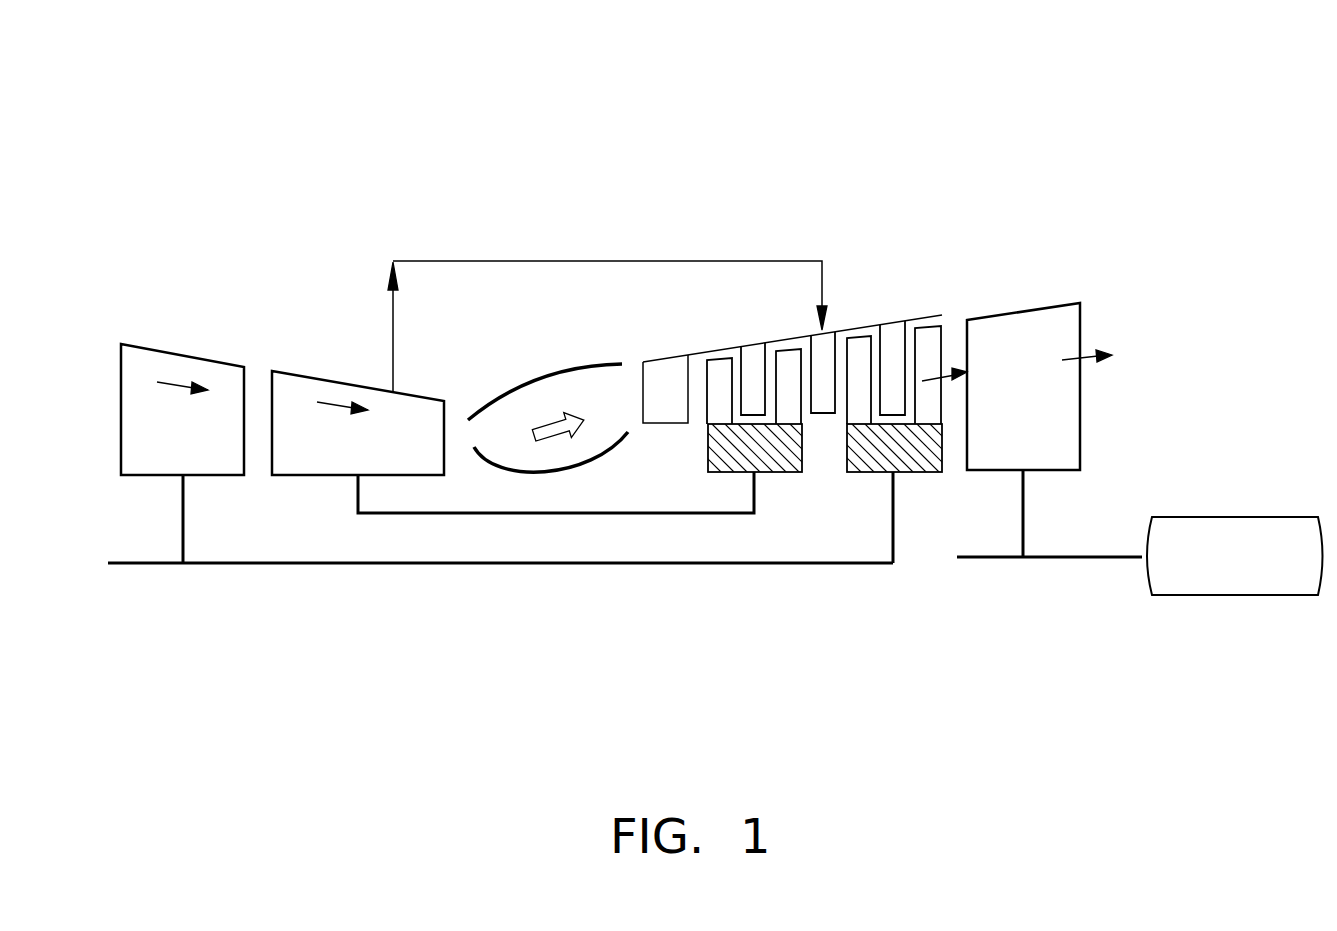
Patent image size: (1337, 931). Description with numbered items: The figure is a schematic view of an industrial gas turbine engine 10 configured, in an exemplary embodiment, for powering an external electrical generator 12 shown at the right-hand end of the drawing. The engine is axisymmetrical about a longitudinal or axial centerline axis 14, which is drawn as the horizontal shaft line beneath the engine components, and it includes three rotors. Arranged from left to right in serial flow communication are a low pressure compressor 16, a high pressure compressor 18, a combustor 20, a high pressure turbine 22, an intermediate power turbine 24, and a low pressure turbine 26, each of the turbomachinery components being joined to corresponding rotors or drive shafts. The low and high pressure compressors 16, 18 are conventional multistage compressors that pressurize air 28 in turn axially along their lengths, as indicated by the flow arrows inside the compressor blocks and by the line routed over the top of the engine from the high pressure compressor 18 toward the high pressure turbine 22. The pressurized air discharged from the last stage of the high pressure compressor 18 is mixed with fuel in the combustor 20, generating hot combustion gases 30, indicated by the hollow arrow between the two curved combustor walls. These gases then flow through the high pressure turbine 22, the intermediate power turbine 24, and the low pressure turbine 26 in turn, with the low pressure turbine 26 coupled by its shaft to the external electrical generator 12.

The industrial gas turbine engine 10 is at (1172, 107).
The external electrical generator 12 is at (1232, 517).
The longitudinal centerline axis 14 is at (158, 565).
The low pressure compressor 16 is at (195, 353).
The high pressure compressor 18 is at (348, 383).
The combustor 20 is at (545, 375).
The high pressure turbine 22 is at (720, 347).
The intermediate power turbine 24 is at (875, 318).
The low pressure turbine 26 is at (1010, 310).
The air 28 is at (170, 385).
The hot combustion gases 30 is at (560, 434).